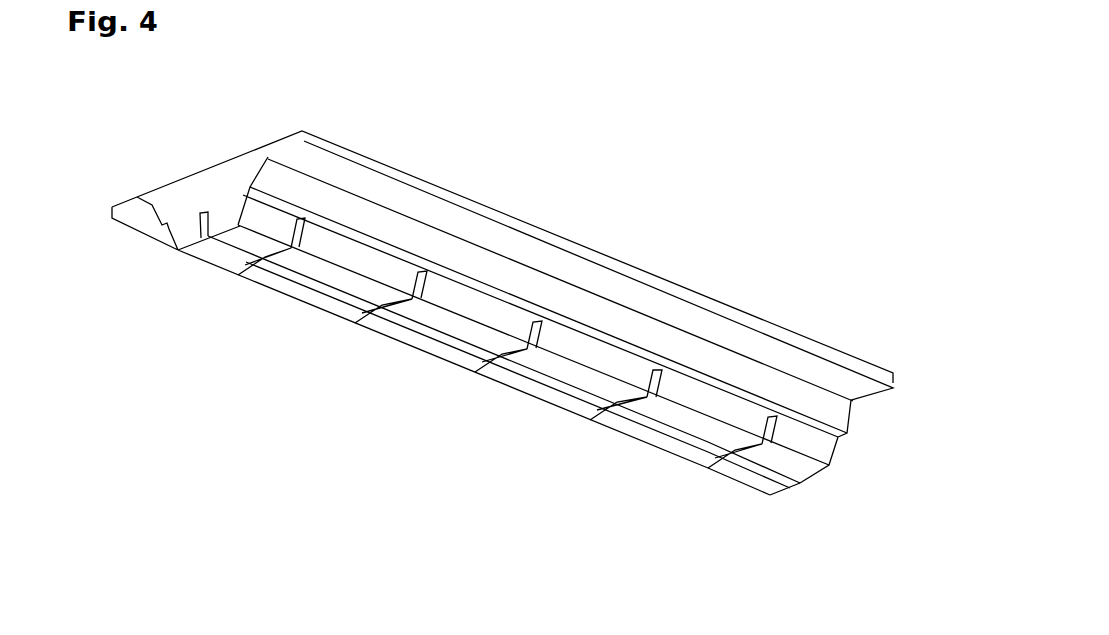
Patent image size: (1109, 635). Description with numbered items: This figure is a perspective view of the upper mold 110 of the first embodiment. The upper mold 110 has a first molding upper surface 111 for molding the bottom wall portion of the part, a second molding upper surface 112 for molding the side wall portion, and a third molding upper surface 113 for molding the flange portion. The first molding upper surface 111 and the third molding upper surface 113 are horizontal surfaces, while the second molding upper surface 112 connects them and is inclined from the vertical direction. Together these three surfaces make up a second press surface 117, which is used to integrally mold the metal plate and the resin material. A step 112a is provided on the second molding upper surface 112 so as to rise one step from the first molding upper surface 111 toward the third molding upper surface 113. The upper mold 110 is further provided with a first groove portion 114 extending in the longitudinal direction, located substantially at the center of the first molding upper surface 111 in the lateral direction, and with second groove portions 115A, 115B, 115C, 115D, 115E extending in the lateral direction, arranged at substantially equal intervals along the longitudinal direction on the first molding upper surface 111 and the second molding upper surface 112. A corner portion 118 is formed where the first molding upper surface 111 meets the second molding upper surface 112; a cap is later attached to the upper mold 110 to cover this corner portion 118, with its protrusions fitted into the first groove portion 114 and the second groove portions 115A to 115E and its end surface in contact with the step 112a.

The upper mold 110 is at (240, 158).
The first molding upper surface 111 is at (220, 243).
The second molding upper surface 112 is at (267, 204).
The step 112a is at (492, 283).
The third molding upper surface 113 is at (400, 195).
The first groove portion 114 is at (202, 219).
The second groove portion 115A is at (233, 290).
The second groove portion 115B is at (348, 334).
The second groove portion 115C is at (470, 380).
The second groove portion 115D is at (590, 428).
The second groove portion 115E is at (707, 477).
The second press surface 117 is at (300, 312).
The corner portion 118 is at (315, 254).